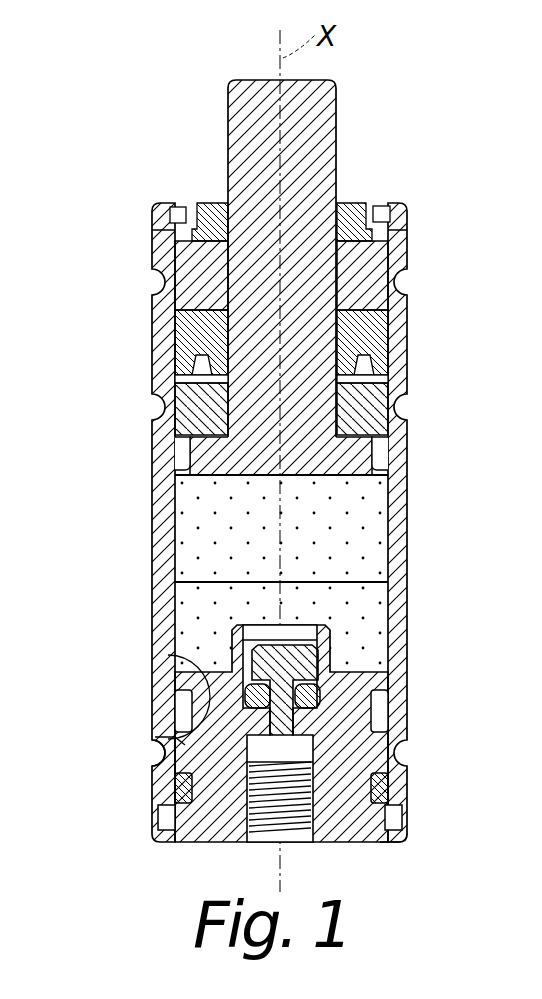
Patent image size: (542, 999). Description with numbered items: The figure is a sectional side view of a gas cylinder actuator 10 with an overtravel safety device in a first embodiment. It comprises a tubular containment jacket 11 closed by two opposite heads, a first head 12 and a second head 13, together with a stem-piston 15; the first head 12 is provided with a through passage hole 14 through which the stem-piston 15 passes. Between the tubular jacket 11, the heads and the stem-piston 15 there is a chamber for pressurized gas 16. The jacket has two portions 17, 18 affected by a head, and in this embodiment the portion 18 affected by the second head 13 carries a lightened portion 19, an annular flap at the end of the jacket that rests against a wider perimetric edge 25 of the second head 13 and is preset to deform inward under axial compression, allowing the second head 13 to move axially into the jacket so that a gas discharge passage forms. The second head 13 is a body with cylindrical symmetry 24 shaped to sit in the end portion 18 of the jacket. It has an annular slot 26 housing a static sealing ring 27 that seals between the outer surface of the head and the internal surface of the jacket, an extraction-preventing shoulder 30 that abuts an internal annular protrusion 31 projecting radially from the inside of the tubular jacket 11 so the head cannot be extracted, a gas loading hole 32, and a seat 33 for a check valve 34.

The gas cylinder actuator 10 is at (276, 484).
The tubular containment jacket 11 is at (166, 570).
The first head 12 is at (399, 252).
The second head 13 is at (364, 736).
The through passage hole 14 is at (336, 285).
The stem-piston 15 is at (346, 396).
The chamber for pressurized gas 16 is at (200, 575).
The portion of tubular jacket affected by a head 17 is at (142, 308).
The end portion of tubular jacket 18 is at (142, 825).
The lightened portion 19 is at (160, 816).
The body with cylindrical symmetry 24 is at (328, 718).
The wider perimetric edge 25 is at (404, 844).
The annular slot 26 is at (388, 782).
The static sealing ring 27 is at (406, 802).
The extraction-preventing shoulder 30 is at (182, 654).
The internal annular protrusion 31 is at (163, 745).
The gas loading hole 32 is at (297, 820).
The seat 33 is at (328, 638).
The check valve 34 is at (302, 643).